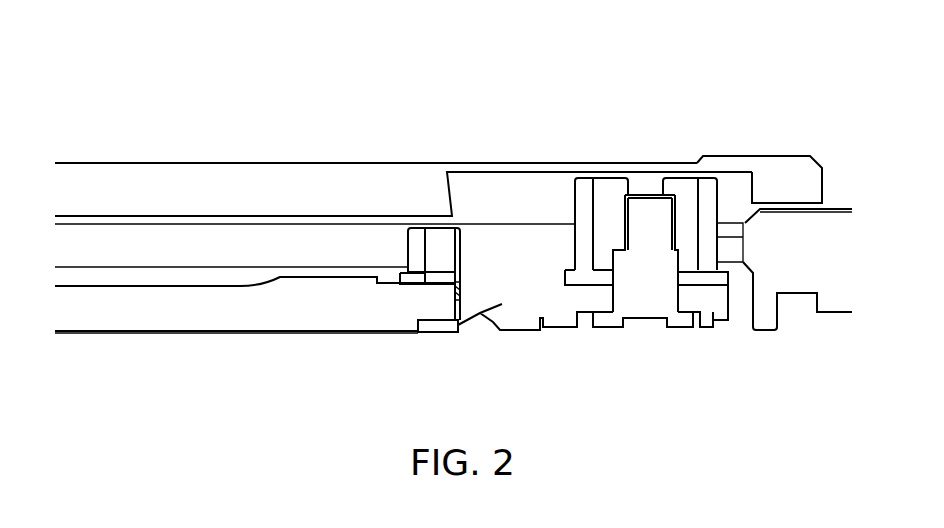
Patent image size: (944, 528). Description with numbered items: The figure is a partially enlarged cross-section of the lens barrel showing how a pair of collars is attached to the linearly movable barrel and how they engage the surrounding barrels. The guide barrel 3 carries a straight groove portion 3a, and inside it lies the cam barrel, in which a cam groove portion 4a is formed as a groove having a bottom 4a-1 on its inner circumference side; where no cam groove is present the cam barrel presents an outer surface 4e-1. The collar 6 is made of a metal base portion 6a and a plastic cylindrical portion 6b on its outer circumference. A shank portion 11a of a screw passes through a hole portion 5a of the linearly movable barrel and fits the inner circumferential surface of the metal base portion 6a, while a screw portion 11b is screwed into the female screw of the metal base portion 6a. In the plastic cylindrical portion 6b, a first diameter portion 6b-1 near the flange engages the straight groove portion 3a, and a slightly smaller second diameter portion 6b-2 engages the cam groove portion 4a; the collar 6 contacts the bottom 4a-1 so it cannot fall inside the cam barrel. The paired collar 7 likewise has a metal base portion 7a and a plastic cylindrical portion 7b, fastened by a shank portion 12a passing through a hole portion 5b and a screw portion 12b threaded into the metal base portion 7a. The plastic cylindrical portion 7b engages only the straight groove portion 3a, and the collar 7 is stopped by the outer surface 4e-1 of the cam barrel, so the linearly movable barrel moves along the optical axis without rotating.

The guide barrel 3 is at (803, 260).
The straight groove portion 3a is at (281, 258).
The cam groove portion 4a is at (455, 205).
The bottom 4a-1 is at (648, 172).
The outer surface 4e-1 is at (224, 220).
The hole portion 5a is at (675, 293).
The hole portion 5b is at (500, 300).
The collar 6 is at (723, 181).
The metal base portion 6a is at (688, 267).
The plastic cylindrical portion 6b is at (708, 238).
The first diameter portion 6b-1 is at (718, 235).
The second diameter portion 6b-2 is at (718, 197).
The collar 7 is at (406, 237).
The metal base portion 7a is at (440, 265).
The plastic cylindrical portion 7b is at (418, 250).
The shank portion 11a is at (621, 337).
The screw portion 11b is at (627, 228).
The shank portion 12a is at (463, 368).
The screw portion 12b is at (458, 248).